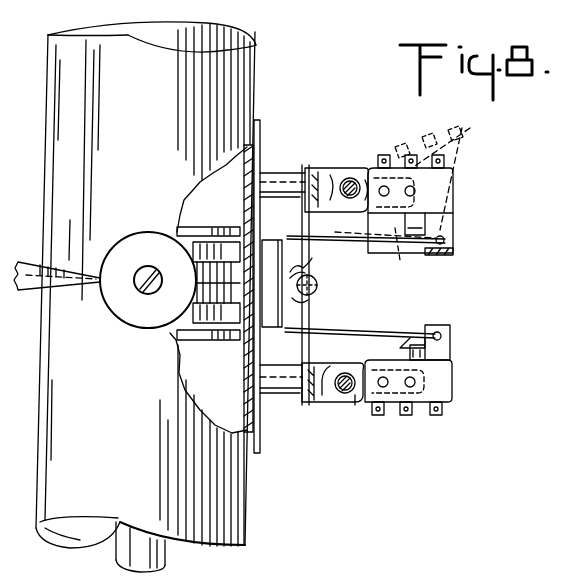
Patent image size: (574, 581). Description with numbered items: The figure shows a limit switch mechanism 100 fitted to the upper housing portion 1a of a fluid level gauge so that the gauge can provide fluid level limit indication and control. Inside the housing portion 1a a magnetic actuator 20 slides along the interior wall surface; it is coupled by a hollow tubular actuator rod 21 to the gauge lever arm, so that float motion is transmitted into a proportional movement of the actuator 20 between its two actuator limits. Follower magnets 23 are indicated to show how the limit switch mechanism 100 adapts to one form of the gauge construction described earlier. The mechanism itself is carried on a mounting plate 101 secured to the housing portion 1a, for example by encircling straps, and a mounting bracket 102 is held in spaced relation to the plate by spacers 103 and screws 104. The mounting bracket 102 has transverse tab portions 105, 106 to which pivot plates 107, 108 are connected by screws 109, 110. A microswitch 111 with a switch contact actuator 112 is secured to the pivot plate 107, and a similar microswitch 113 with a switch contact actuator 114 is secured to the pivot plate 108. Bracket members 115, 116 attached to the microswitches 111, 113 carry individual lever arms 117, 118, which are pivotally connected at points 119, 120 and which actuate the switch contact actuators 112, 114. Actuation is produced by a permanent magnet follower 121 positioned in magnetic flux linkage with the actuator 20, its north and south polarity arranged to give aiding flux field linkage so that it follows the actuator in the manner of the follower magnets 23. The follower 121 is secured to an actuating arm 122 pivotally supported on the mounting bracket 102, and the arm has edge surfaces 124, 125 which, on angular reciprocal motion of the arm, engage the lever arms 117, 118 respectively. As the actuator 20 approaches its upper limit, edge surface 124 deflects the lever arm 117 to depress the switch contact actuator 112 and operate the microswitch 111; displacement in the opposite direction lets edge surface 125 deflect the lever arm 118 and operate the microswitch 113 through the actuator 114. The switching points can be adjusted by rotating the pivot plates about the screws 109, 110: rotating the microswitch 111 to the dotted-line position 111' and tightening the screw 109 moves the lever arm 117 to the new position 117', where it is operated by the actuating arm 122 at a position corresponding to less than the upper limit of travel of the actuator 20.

The upper housing portion 1a is at (245, 76).
The magnetic actuator 20 is at (219, 214).
The hollow tubular actuator rod 21 is at (162, 553).
The follower magnets 23 is at (143, 232).
The limit switch mechanism 100 is at (452, 289).
The mounting plate 101 is at (261, 140).
The mounting bracket 102 is at (311, 313).
The spacers 103 is at (277, 172).
The screws 104 is at (318, 168).
The transverse tab portion 105 is at (334, 205).
The transverse tab portion 106 is at (330, 370).
The pivot plate 107 is at (372, 208).
The pivot plate 108 is at (356, 404).
The screw 109 is at (352, 178).
The screw 110 is at (352, 374).
The microswitch 111 is at (445, 204).
The microswitch dotted-line position 111' is at (455, 177).
The switch contact actuator 112 is at (455, 224).
The microswitch 113 is at (455, 382).
The switch contact actuator 114 is at (410, 338).
The bracket member 115 is at (455, 238).
The bracket member 116 is at (452, 352).
The lever arm 117 is at (385, 257).
The lever arm dotted-line position 117' is at (413, 256).
The lever arm 118 is at (387, 329).
The pivot point 119 is at (446, 243).
The pivot point 120 is at (446, 327).
The permanent magnet follower 121 is at (276, 328).
The actuating arm 122 is at (318, 280).
The edge surface 124 is at (312, 266).
The edge surface 125 is at (316, 298).